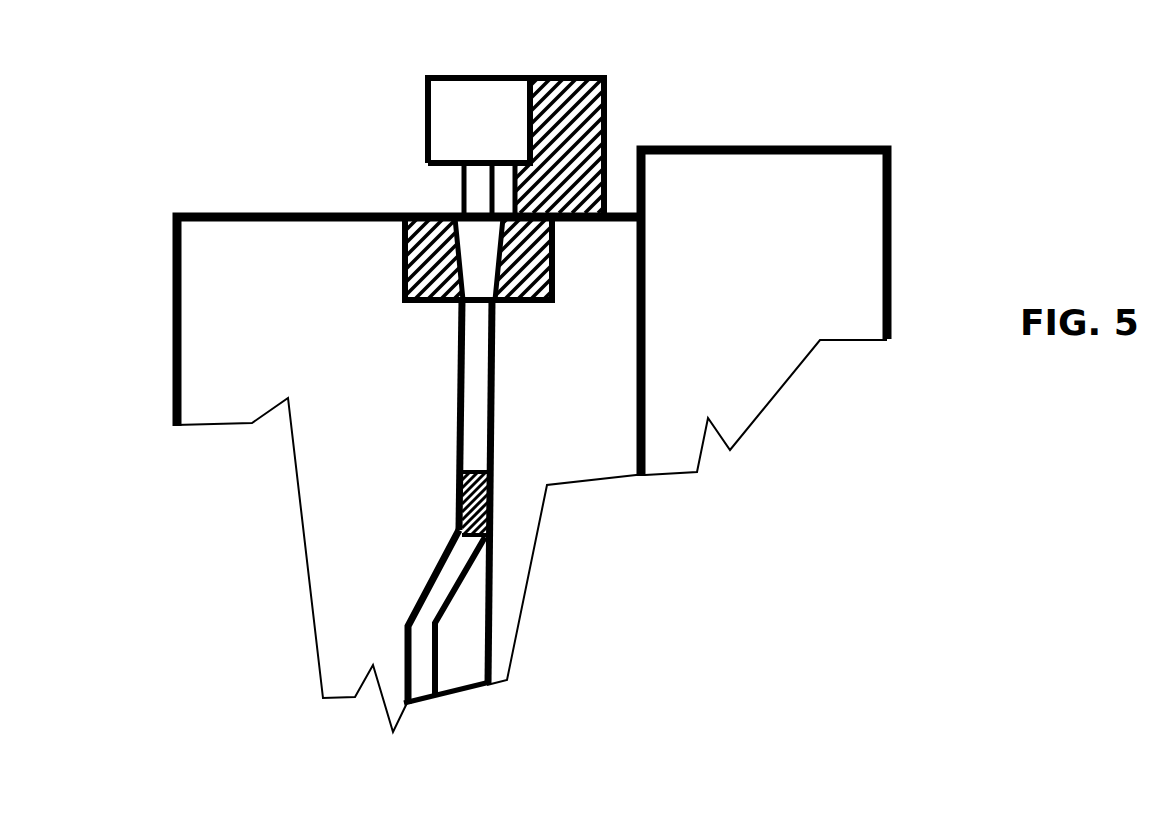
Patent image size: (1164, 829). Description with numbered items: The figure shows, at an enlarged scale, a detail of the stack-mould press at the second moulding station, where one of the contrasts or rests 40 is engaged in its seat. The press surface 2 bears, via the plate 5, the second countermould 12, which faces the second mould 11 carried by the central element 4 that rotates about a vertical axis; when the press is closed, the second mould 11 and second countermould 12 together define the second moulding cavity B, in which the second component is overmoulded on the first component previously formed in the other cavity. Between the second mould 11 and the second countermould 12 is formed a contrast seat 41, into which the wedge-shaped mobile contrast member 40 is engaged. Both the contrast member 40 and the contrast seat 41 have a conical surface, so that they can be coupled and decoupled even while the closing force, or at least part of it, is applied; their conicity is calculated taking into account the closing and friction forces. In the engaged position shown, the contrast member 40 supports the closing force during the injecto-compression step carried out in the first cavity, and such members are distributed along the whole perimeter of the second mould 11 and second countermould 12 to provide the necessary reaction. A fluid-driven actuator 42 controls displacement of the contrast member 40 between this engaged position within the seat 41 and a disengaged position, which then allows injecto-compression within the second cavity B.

The press surface 2 is at (787, 187).
The central element 4 is at (272, 238).
The plate 5 is at (577, 442).
The second mould 11 is at (413, 667).
The second countermould 12 is at (473, 645).
The contrast member 40 is at (475, 243).
The contrast seat 41 is at (468, 262).
The fluid-driven actuator 42 is at (462, 117).
The second moulding cavity B is at (425, 677).